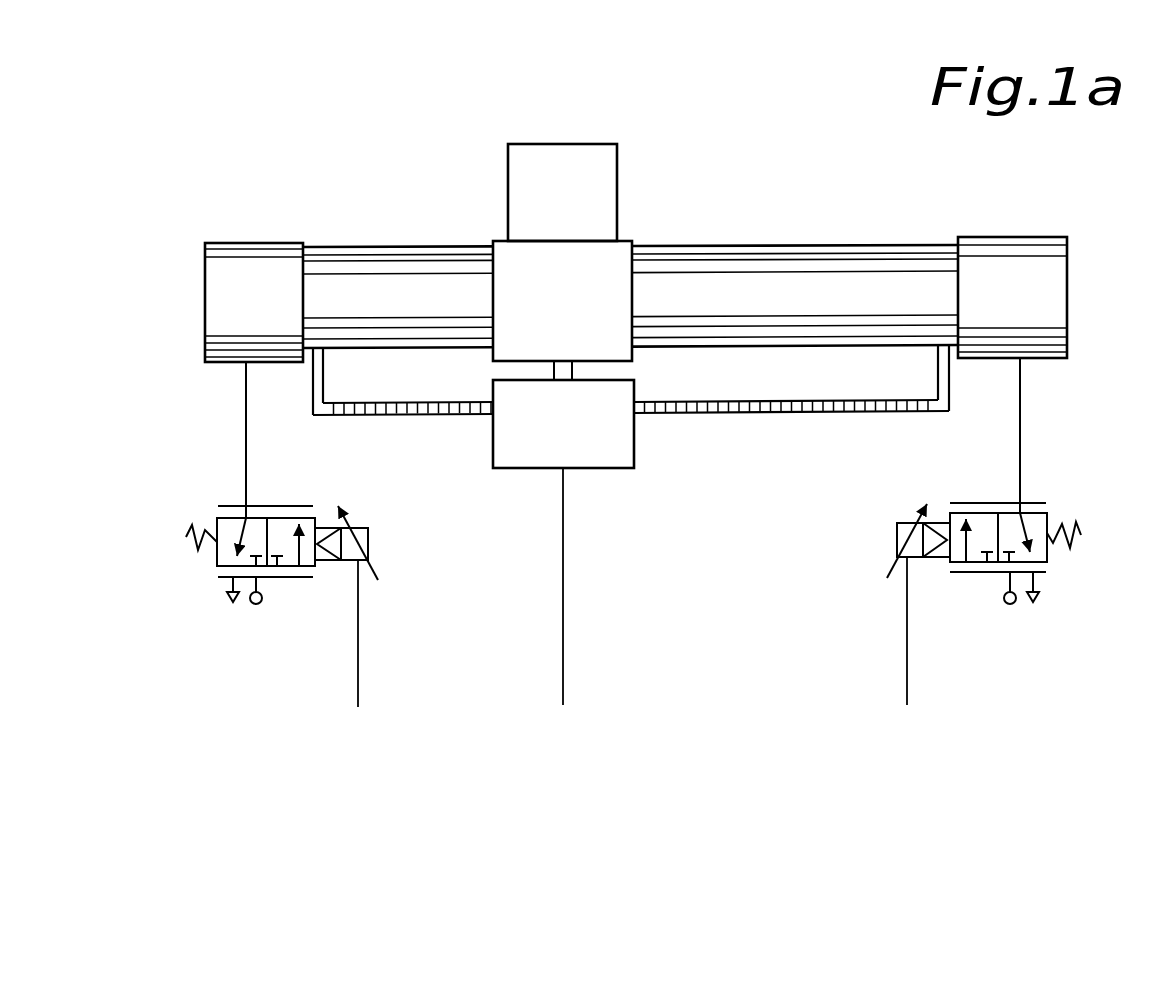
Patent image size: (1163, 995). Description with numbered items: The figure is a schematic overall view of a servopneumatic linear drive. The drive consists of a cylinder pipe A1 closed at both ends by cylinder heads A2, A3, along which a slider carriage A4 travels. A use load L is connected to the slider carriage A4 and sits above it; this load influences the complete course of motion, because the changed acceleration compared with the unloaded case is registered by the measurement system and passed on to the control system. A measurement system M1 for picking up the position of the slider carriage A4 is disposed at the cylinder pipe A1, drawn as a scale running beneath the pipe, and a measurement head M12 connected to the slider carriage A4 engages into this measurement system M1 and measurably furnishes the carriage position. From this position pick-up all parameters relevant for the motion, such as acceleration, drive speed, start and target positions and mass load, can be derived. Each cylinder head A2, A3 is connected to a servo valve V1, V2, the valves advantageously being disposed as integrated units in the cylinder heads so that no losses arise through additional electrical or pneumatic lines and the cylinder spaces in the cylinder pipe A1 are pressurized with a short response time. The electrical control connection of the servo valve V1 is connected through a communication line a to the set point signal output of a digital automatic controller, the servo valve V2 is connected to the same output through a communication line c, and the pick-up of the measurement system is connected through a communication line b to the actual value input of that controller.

The cylinder pipe A1 is at (630, 296).
The cylinder head A2 is at (254, 302).
The cylinder head A3 is at (1012, 297).
The slider carriage A4 is at (562, 310).
The use load L is at (562, 192).
The measurement system M1 is at (403, 410).
The measurement head M12 is at (563, 424).
The servo valve V1 is at (265, 543).
The servo valve V2 is at (1000, 538).
The communication line a is at (357, 664).
The communication line b is at (575, 619).
The communication line c is at (909, 660).